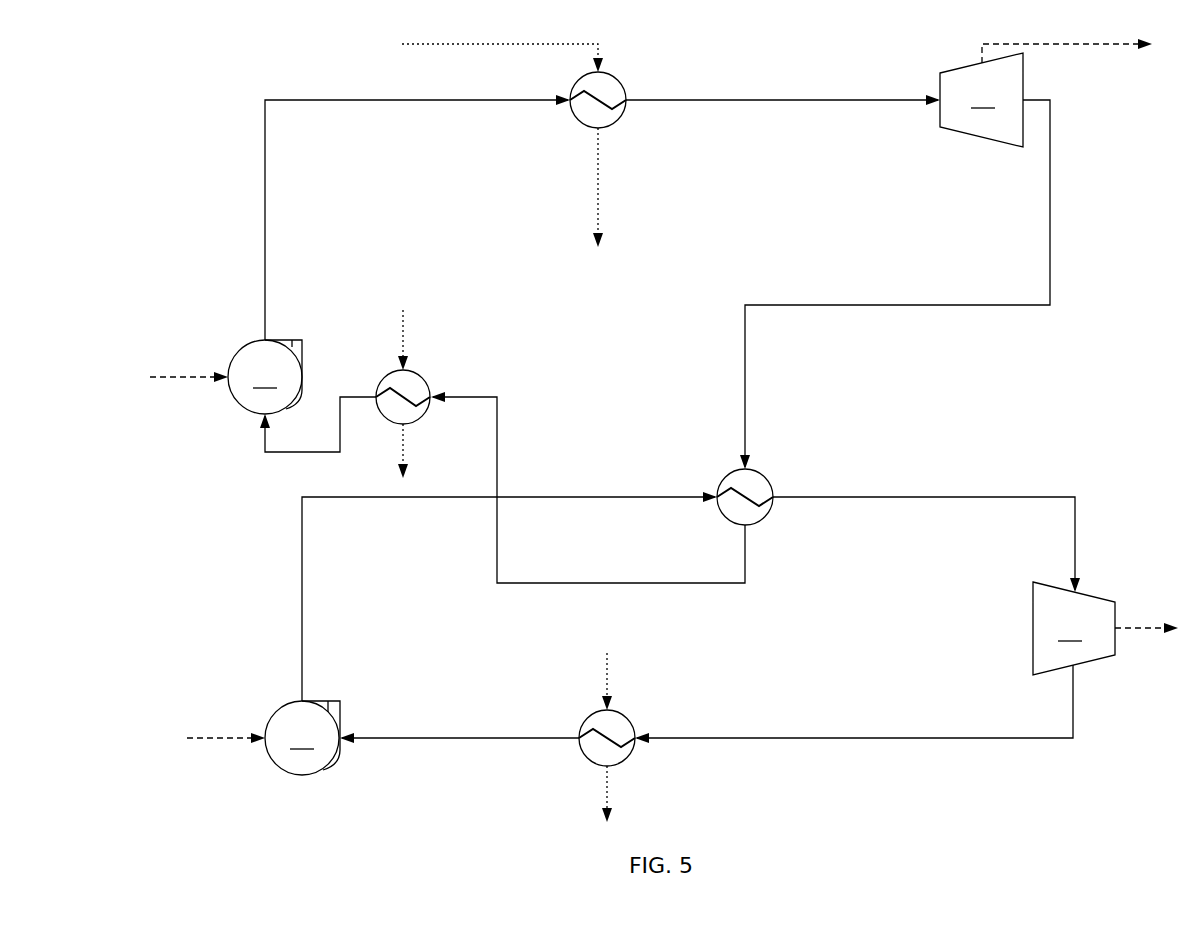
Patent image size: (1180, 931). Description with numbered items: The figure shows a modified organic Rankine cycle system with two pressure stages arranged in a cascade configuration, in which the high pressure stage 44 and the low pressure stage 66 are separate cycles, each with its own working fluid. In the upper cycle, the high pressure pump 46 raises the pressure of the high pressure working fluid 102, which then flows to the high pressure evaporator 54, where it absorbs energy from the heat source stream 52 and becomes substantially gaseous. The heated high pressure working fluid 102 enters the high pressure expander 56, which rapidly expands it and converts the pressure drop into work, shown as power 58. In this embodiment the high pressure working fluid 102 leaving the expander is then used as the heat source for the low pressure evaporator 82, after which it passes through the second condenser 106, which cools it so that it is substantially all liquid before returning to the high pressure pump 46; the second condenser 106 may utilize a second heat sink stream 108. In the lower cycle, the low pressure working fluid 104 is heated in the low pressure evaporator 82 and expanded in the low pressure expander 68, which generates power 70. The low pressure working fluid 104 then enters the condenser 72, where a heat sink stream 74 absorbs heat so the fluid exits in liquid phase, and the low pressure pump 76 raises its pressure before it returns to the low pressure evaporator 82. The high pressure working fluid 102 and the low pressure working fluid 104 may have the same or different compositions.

The high pressure stage 44 is at (728, 240).
The high pressure pump 46 is at (226, 377).
The heat source stream 52 is at (438, 45).
The high pressure evaporator 54 is at (628, 82).
The high pressure expander 56 is at (981, 100).
The power 58 is at (1082, 48).
The low pressure stage 66 is at (760, 655).
The low pressure expander 68 is at (1074, 628).
The power 70 is at (1152, 635).
The condenser 72 is at (582, 755).
The heat sink stream 74 is at (605, 664).
The low pressure pump 76 is at (263, 738).
The low pressure evaporator 82 is at (772, 478).
The high pressure working fluid 102 is at (315, 97).
The low pressure working fluid 104 is at (598, 493).
The second condenser 106 is at (432, 377).
The second heat sink stream 108 is at (398, 323).